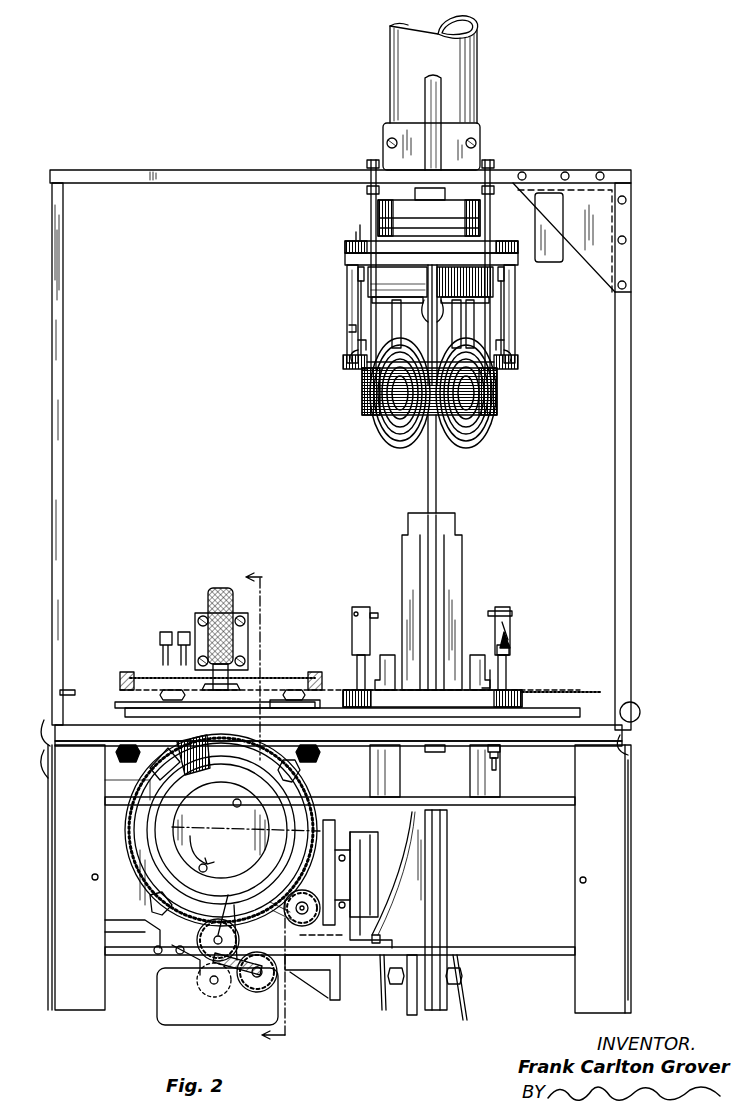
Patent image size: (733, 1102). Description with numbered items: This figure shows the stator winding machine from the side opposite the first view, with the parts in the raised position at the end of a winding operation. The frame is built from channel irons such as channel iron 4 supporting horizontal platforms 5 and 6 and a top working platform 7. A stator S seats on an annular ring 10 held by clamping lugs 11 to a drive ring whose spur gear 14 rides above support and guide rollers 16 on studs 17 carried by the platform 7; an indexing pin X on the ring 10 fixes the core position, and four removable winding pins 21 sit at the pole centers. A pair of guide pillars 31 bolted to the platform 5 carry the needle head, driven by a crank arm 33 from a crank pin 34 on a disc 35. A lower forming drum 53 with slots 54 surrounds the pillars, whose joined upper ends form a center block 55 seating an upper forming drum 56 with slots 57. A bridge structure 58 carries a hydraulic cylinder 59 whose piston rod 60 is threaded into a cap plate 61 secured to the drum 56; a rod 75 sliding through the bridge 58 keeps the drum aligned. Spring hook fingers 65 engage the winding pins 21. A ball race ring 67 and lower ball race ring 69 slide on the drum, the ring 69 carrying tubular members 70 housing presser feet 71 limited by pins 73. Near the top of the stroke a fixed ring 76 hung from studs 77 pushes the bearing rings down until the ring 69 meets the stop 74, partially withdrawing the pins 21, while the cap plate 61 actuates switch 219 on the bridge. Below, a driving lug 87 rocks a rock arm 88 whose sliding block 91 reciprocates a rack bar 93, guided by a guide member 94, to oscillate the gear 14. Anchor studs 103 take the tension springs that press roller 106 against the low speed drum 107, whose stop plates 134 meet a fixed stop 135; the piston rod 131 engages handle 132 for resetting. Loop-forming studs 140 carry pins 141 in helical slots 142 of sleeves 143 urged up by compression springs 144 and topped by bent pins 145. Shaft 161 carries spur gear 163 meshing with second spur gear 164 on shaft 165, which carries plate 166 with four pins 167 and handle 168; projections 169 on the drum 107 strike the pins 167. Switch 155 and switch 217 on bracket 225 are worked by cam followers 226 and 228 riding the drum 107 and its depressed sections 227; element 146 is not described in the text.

The channel iron 4 is at (625, 745).
The horizontal platform 5 is at (562, 956).
The horizontal platform 6 is at (570, 800).
The top working surface platform 7 is at (630, 735).
The annular ring 10 is at (520, 695).
The clamping lugs 11 is at (520, 707).
The spur gear 14 is at (336, 712).
The support and guide rollers 16 is at (500, 753).
The studs 17 is at (496, 769).
The winding pins 21 is at (392, 328).
The guide pillars 31 is at (410, 556).
The crank arm 33 is at (437, 870).
The crank pin 34 is at (458, 979).
The disc 35 is at (410, 1012).
The forming drum 53 is at (385, 670).
The slots 54 is at (428, 753).
The center block 55 is at (437, 519).
The upper forming drum 56 is at (430, 285).
The slots 57 is at (429, 325).
The bridge structure 58 is at (168, 190).
The hydraulic cylinder 59 is at (466, 73).
The piston rod 60 is at (446, 192).
The cap plate 61 is at (390, 208).
The spring hook fingers 65 is at (428, 321).
The ball race ring 67 is at (348, 252).
The lower ball race ring 69 is at (346, 262).
The tubular members 70 is at (347, 310).
The presser foot 71 is at (344, 366).
The pins 73 is at (350, 327).
The stop 74 is at (360, 278).
The rod 75 is at (430, 93).
The fixed ring 76 is at (356, 244).
The studs 77 is at (370, 222).
The driving lug 87 is at (168, 690).
The rock arm 88 is at (118, 703).
The sliding block 91 is at (288, 700).
The rack bar 93 is at (565, 704).
The guide member 94 is at (120, 721).
The anchor studs 103 is at (145, 749).
The roller 106 is at (225, 794).
The low speed drum 107 is at (135, 837).
The piston rod 131 is at (238, 643).
The handle 132 is at (215, 591).
The stop plates 134 is at (140, 902).
The fixed stop 135 is at (152, 925).
The studs 140 is at (357, 667).
The pins 141 is at (510, 649).
The helical slot 142 is at (352, 624).
The sleeves 143 is at (356, 607).
The compression springs 144 is at (512, 639).
The right angularly bent pin 145 is at (374, 612).
The hooks 146 is at (360, 345).
The switch 155 is at (365, 838).
The shaft 161 is at (282, 1000).
The spur gear 163 is at (257, 990).
The second spur gear 164 is at (217, 991).
The shaft 165 is at (208, 957).
The plate 166 is at (180, 957).
The pins 167 is at (220, 921).
The manual actuating handle 168 is at (300, 940).
The projections 169 is at (155, 764).
The switch 217 is at (375, 929).
The switch 219 is at (570, 258).
The bracket 225 is at (370, 950).
The cam follower 226 is at (330, 840).
The depressed sections 227 is at (246, 830).
The cam follower 228 is at (326, 935).
The stator S is at (492, 404).
The pin X is at (490, 687).